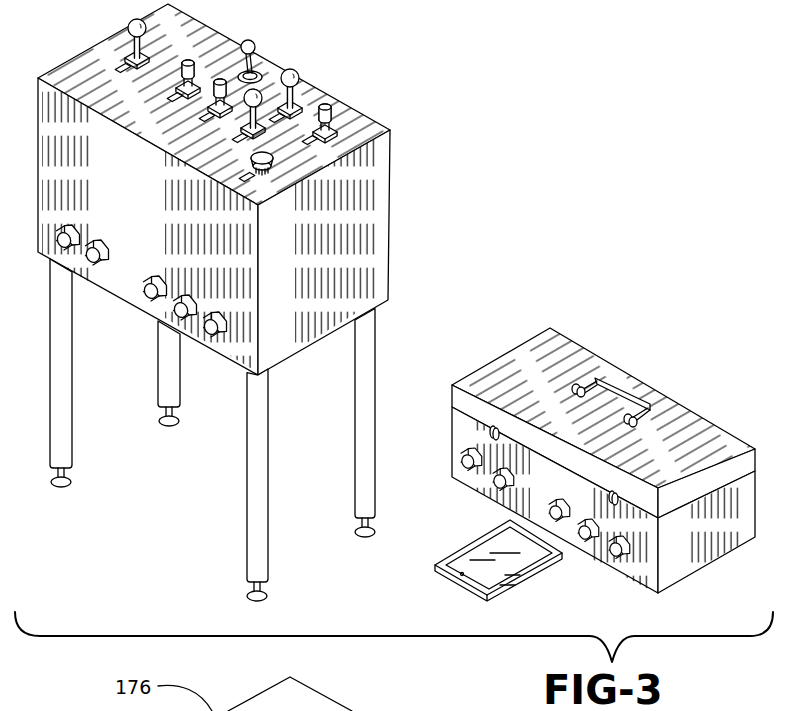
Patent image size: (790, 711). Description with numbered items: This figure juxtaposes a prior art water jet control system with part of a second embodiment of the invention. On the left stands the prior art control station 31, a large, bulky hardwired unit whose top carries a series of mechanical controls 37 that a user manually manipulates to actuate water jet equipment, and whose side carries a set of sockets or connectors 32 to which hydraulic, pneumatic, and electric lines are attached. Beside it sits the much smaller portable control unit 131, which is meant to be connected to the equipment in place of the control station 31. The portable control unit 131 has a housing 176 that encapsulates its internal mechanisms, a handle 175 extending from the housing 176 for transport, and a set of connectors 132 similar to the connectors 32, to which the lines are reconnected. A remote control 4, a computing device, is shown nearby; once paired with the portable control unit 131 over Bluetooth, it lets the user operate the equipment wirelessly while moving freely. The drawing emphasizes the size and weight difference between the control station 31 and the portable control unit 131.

The control station 31 is at (393, 200).
The mechanical controls 37 is at (292, 72).
The connectors 32 is at (177, 319).
The portable control unit 131 is at (577, 447).
The handle 175 is at (622, 386).
The housing 176 is at (523, 345).
The connectors 132 is at (498, 486).
The remote control 4 is at (450, 580).